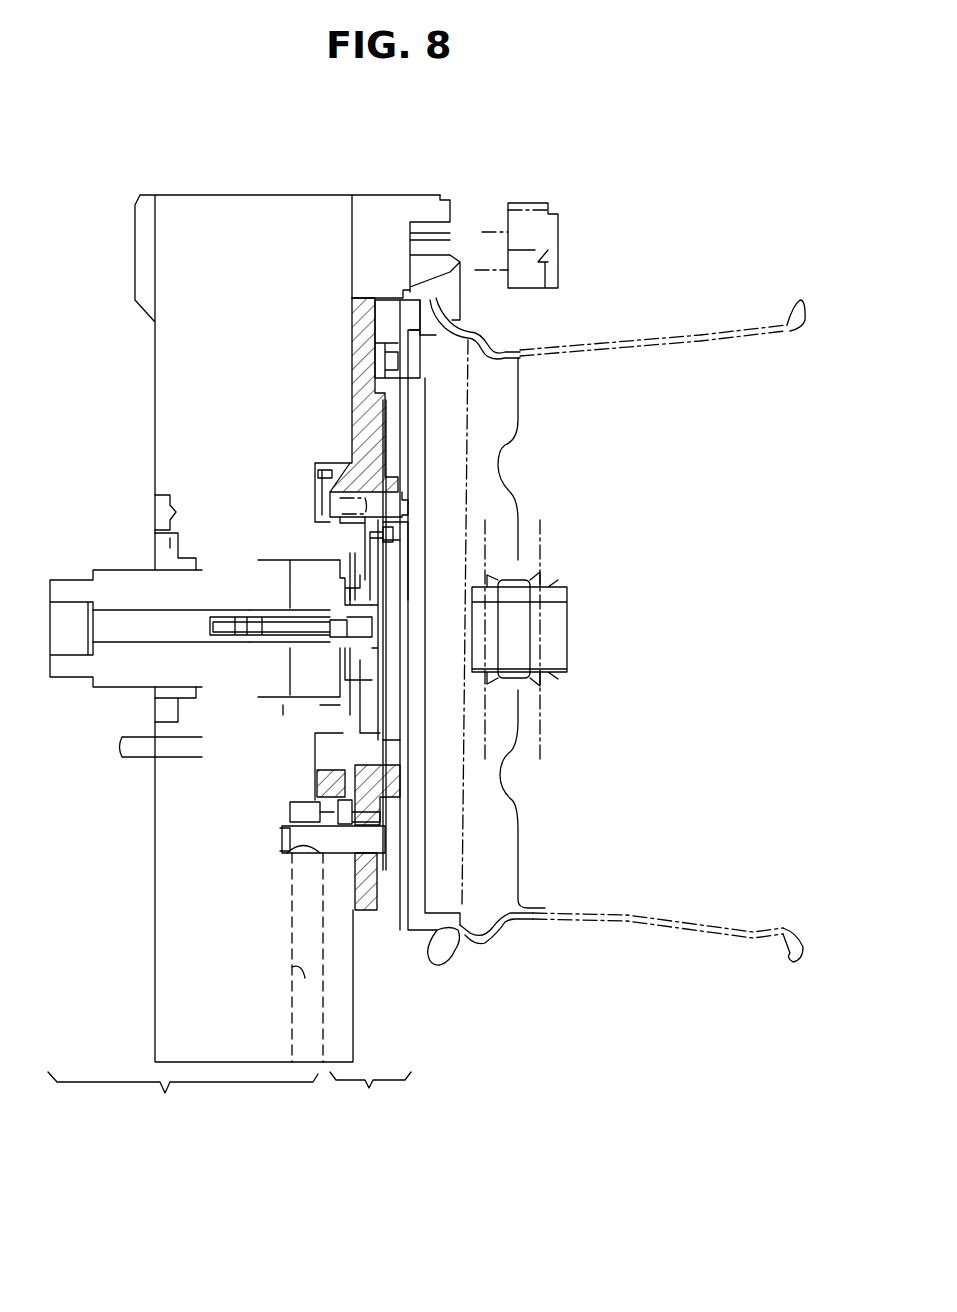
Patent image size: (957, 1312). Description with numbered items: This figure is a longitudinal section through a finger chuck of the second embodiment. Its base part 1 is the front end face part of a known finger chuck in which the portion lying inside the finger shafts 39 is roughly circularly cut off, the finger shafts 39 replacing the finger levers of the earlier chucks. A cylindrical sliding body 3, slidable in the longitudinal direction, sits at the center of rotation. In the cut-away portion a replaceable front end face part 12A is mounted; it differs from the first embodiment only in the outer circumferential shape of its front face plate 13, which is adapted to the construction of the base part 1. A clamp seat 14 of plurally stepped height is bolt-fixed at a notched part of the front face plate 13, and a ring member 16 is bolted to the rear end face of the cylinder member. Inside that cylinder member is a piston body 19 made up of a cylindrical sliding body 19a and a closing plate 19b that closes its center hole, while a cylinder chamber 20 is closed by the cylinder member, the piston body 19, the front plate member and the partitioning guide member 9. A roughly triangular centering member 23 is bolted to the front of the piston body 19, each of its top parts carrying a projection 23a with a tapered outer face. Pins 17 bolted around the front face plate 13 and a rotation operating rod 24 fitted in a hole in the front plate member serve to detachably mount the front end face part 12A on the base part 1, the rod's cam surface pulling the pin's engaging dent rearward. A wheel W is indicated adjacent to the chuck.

The base part 1 is at (244, 668).
The cylindrical sliding body 3 is at (107, 573).
The partitioning guide member 9 is at (337, 710).
The front end face part 12A is at (370, 990).
The front face plate 13 is at (345, 410).
The clamp seat 14 is at (388, 315).
The ring member 16 is at (320, 496).
The pin 17 is at (400, 837).
The piston body 19 is at (398, 575).
The cylindrical sliding body 19a is at (393, 742).
The closing plate 19b is at (383, 568).
The cylinder chamber 20 is at (357, 540).
The centering member 23 is at (430, 455).
The projection 23a is at (447, 910).
The rotation operating rod 24 is at (290, 916).
The finger shaft 39 is at (482, 232).
The wheel W is at (733, 330).